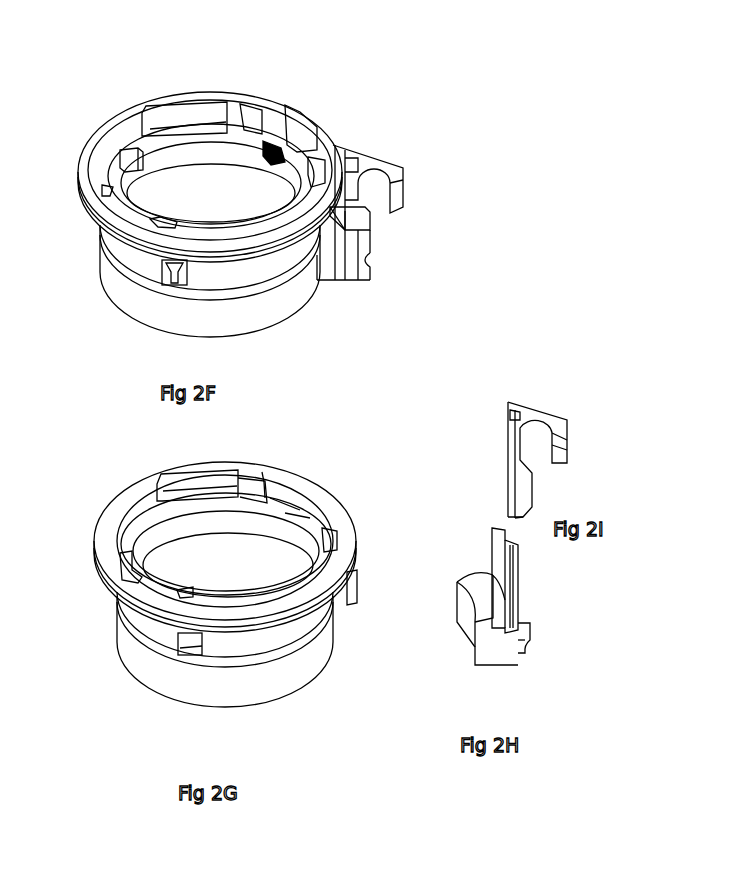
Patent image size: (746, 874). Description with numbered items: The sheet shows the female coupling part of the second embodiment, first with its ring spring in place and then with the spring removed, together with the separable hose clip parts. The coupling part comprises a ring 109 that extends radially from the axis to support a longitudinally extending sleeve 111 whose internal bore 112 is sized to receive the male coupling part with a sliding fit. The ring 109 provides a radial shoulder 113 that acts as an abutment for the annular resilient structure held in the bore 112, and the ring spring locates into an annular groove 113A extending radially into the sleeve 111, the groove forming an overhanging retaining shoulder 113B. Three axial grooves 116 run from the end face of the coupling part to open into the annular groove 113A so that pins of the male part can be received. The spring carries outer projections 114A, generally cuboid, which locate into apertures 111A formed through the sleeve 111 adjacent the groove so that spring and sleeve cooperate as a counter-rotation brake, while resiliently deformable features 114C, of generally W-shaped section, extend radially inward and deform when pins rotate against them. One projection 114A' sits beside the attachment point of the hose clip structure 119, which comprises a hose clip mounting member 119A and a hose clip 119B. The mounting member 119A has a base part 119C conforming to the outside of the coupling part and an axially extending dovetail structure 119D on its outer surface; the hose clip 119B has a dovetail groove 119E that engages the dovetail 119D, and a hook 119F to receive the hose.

In FIG. 2F, the ring 109 is at (307, 302).
In FIG. 2G, the ring 109 is at (287, 695).
In FIG. 2F, the sleeve 111 is at (117, 110).
In FIG. 2G, the sleeve 111 is at (103, 512).
In FIG. 2G, the apertures 111A is at (347, 593).
In FIG. 2F, the internal bore 112 is at (260, 137).
In FIG. 2G, the internal bore 112 is at (268, 495).
In FIG. 2G, the radial shoulder 113 is at (202, 510).
In FIG. 2G, the annular groove 113A is at (282, 515).
In FIG. 2G, the overhanging retaining shoulder 113B is at (292, 515).
In FIG. 2F, the outer projections 114A is at (122, 297).
In FIG. 2F, the projection 114A' is at (391, 248).
In FIG. 2F, the resiliently deformable features 114C is at (272, 133).
In FIG. 2F, the axial grooves 116 is at (157, 107).
In FIG. 2F, the hose clip structure 119 is at (403, 170).
In FIG. 2H, the hose clip mounting member 119A is at (530, 628).
In FIG. 2I, the hose clip 119B is at (567, 422).
In FIG. 2H, the base part 119C is at (477, 665).
In FIG. 2H, the dovetail structure 119D is at (518, 580).
In FIG. 2I, the dovetail groove 119E is at (520, 412).
In FIG. 2I, the hook 119F is at (555, 437).